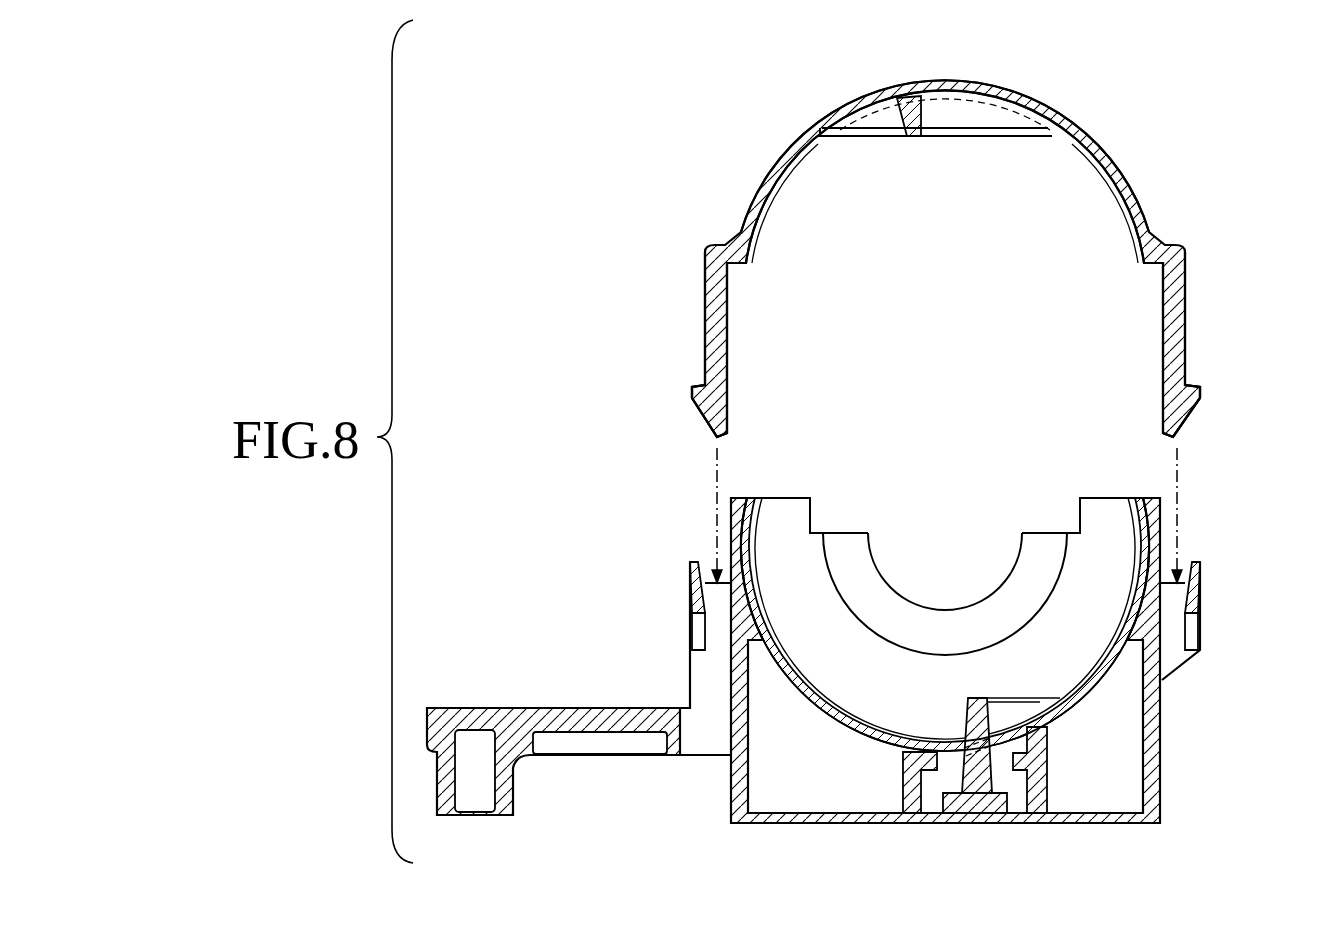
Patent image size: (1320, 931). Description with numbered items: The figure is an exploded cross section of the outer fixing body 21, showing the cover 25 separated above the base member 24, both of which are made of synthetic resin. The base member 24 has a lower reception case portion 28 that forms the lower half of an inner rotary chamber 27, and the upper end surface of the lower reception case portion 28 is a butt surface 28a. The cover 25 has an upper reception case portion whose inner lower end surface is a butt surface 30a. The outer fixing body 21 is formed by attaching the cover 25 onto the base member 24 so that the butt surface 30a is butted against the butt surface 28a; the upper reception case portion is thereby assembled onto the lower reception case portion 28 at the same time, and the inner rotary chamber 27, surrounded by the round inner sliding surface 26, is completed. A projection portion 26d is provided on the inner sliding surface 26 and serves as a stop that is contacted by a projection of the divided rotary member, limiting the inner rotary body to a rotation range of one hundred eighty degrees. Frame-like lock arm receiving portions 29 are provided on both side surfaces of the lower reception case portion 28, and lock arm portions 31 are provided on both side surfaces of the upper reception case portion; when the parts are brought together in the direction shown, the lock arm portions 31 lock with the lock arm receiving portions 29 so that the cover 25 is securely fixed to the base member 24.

The outer fixing body 21 is at (938, 414).
The base member 24 is at (594, 670).
The cover 25 is at (690, 276).
The inner sliding surface 26 is at (814, 164).
The projection portion 26d is at (944, 100).
The inner rotary chamber 27 is at (945, 660).
The lower reception case portion 28 is at (838, 713).
The butt surface 28a is at (1150, 496).
The lock arm receiving portion 29 is at (696, 596).
The butt surface 30a is at (1178, 262).
The lock arm portion 31 is at (700, 390).